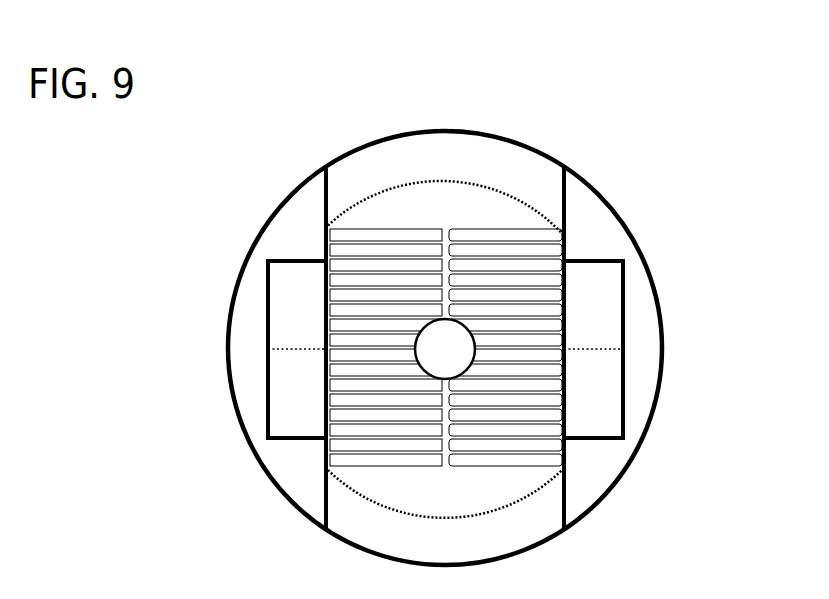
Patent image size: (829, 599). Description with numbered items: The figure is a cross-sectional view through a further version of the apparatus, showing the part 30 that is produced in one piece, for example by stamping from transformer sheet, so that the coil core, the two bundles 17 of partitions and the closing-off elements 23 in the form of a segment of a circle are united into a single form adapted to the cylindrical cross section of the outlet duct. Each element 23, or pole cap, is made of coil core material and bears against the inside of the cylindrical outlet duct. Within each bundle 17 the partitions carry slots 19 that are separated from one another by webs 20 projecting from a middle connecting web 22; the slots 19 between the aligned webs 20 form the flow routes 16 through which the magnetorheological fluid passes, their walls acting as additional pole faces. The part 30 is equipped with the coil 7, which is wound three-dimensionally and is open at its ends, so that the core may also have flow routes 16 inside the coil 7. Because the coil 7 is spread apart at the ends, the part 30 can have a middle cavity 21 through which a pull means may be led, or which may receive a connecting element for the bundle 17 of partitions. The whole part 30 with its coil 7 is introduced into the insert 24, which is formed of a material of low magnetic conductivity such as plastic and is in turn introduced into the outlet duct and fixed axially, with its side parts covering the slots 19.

The coil 7 is at (608, 283).
The flow routes 16 is at (384, 235).
The bundle 17 is at (320, 367).
The slots 19 is at (337, 293).
The webs 20 is at (337, 250).
The middle cavity 21 is at (442, 352).
The connecting web 22 is at (447, 245).
The element in the form of a segment of a circle 23 is at (439, 203).
The insert 24 is at (610, 454).
The part 30 is at (534, 176).